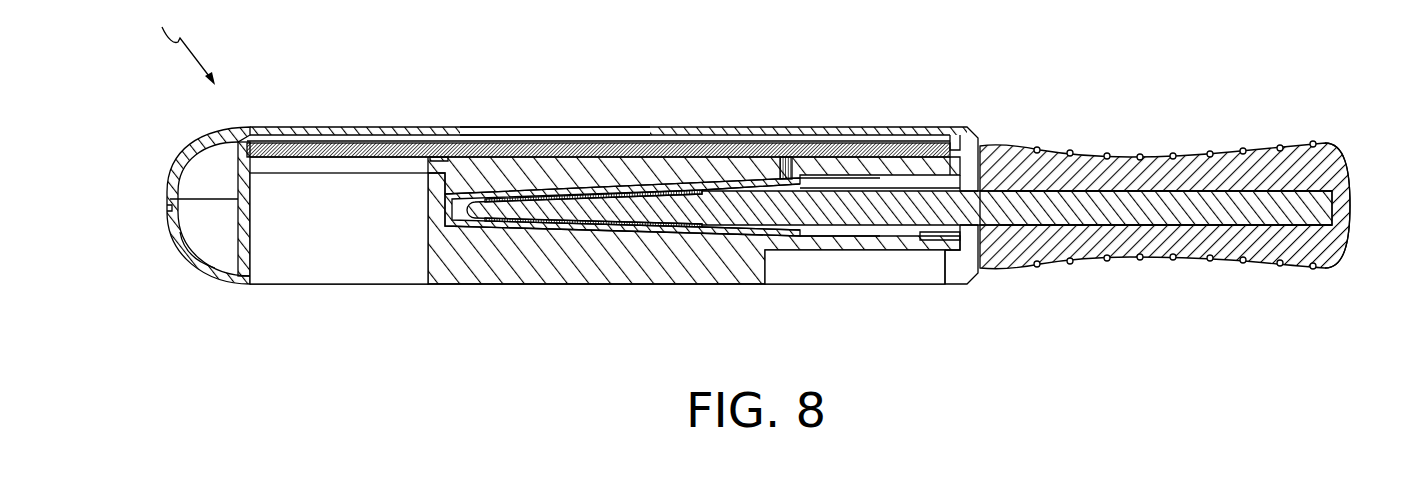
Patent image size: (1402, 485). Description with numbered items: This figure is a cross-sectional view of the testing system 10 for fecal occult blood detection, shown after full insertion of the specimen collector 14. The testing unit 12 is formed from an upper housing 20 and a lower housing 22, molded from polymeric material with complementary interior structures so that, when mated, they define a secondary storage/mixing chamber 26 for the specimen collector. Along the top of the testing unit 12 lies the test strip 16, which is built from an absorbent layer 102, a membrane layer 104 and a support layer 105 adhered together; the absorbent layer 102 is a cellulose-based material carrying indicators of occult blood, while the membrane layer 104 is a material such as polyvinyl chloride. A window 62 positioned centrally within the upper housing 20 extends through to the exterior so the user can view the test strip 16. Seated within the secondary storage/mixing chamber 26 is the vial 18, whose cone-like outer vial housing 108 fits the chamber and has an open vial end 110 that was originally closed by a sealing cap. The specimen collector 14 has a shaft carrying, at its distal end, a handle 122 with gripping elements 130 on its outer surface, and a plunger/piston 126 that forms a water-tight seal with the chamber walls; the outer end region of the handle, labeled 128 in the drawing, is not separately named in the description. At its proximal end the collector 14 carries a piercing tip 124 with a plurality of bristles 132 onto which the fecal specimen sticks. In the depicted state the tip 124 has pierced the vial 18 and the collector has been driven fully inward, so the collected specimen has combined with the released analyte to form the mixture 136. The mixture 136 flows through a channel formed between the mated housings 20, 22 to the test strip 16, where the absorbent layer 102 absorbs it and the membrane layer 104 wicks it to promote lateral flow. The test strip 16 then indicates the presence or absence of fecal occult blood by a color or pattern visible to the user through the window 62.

The testing system 10 is at (181, 45).
The testing unit 12 is at (258, 128).
The specimen collector 14 is at (1225, 152).
The test strip 16 is at (895, 135).
The vial 18 is at (630, 228).
The upper housing 20 is at (182, 142).
The lower housing 22 is at (175, 270).
The secondary storage/mixing chamber 26 is at (637, 160).
The window 62 is at (582, 135).
The absorbent layer 102 is at (526, 145).
The membrane layer 104 is at (350, 142).
The support layer 105 is at (473, 138).
The outer vial housing 108 is at (455, 200).
The open vial end 110 is at (810, 250).
The handle 122 is at (1145, 225).
The piercing tip 124 is at (690, 234).
The plunger/piston 126 is at (915, 250).
The handle end 128 is at (1295, 268).
The gripping elements 130 is at (1122, 155).
The bristles 132 is at (558, 225).
The mixture 136 is at (790, 165).